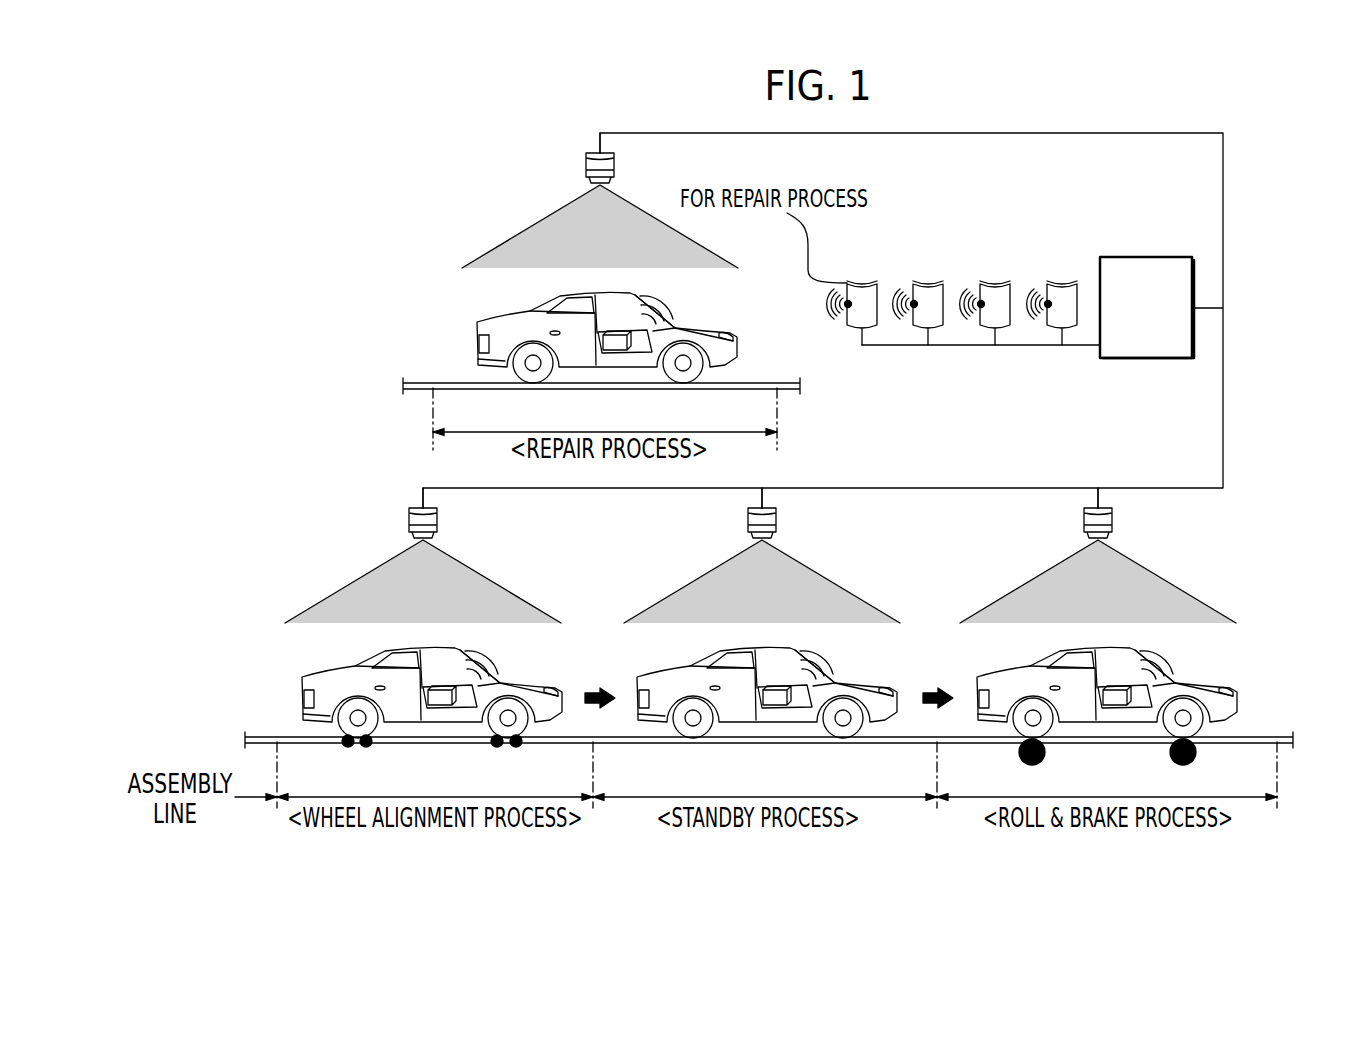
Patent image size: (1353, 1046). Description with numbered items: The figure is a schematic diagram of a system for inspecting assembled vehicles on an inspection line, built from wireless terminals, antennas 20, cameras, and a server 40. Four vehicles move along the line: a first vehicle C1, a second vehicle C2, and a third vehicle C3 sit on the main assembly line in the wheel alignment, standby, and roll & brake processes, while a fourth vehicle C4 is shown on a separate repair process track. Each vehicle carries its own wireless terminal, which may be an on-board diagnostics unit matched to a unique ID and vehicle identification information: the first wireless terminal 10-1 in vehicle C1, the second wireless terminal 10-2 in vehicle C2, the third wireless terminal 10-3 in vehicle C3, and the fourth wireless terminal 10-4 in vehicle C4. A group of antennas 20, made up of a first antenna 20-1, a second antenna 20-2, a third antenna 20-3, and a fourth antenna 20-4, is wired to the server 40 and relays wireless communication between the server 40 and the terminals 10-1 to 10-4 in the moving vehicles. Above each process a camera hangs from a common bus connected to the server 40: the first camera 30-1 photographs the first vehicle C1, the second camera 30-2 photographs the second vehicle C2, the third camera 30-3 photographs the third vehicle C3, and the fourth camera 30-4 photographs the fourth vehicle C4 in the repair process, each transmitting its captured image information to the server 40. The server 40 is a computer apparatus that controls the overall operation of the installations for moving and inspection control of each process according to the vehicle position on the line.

The first wireless terminal 10-1 is at (1115, 706).
The second wireless terminal 10-2 is at (776, 706).
The third wireless terminal 10-3 is at (440, 706).
The fourth wireless terminal 10-4 is at (616, 350).
The antenna 20 is at (1078, 229).
The first antenna 20-1 is at (1061, 281).
The second antenna 20-2 is at (994, 281).
The third antenna 20-3 is at (927, 281).
The fourth antenna 20-4 is at (860, 281).
The first camera 30-1 is at (1084, 517).
The second camera 30-2 is at (748, 517).
The third camera 30-3 is at (409, 517).
The fourth camera 30-4 is at (586, 162).
The server 40 is at (1146, 257).
The first vehicle C1 is at (1028, 665).
The second vehicle C2 is at (690, 663).
The third vehicle C3 is at (353, 663).
The fourth vehicle C4 is at (527, 307).